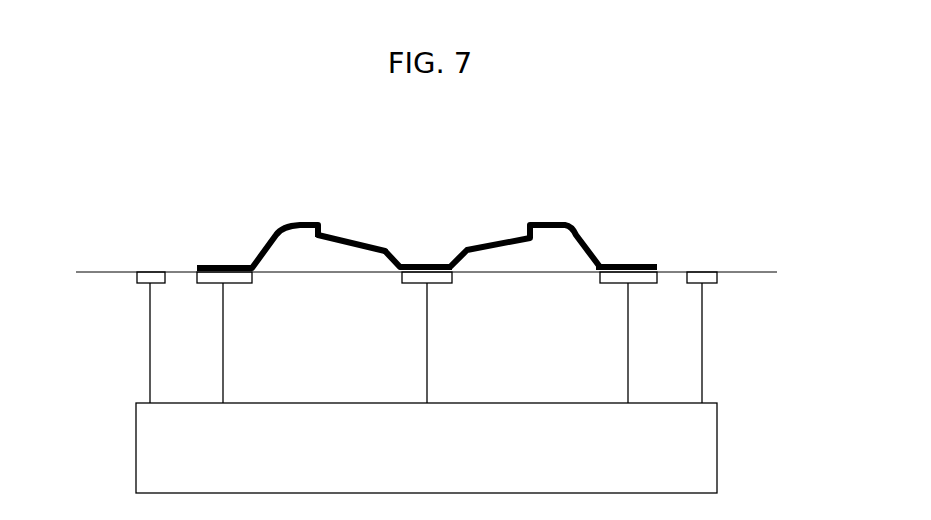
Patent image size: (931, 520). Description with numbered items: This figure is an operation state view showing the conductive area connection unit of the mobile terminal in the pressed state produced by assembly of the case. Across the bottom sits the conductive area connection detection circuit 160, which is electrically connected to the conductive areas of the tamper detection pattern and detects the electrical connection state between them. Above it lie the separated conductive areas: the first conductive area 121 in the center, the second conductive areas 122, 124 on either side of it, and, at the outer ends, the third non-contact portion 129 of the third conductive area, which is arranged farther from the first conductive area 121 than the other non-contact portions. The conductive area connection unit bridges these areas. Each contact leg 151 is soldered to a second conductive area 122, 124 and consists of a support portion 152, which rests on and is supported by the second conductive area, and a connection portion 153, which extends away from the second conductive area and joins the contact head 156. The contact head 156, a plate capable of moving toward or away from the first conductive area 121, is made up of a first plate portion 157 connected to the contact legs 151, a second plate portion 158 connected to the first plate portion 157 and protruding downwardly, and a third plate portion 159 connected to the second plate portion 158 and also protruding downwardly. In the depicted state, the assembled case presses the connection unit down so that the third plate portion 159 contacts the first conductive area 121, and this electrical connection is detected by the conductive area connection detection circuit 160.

The first conductive area 121 is at (451, 284).
The second conductive area 122 is at (650, 285).
The second conductive area 124 is at (201, 282).
The third non-contact portion 129 is at (140, 281).
The contact leg 151 is at (553, 186).
The support portion 152 is at (632, 262).
The connection portion 153 is at (578, 230).
The contact head 156 is at (324, 187).
The first plate portion 157 is at (312, 224).
The second plate portion 158 is at (365, 244).
The third plate portion 159 is at (407, 210).
The conductive area connection detection circuit 160 is at (426, 448).